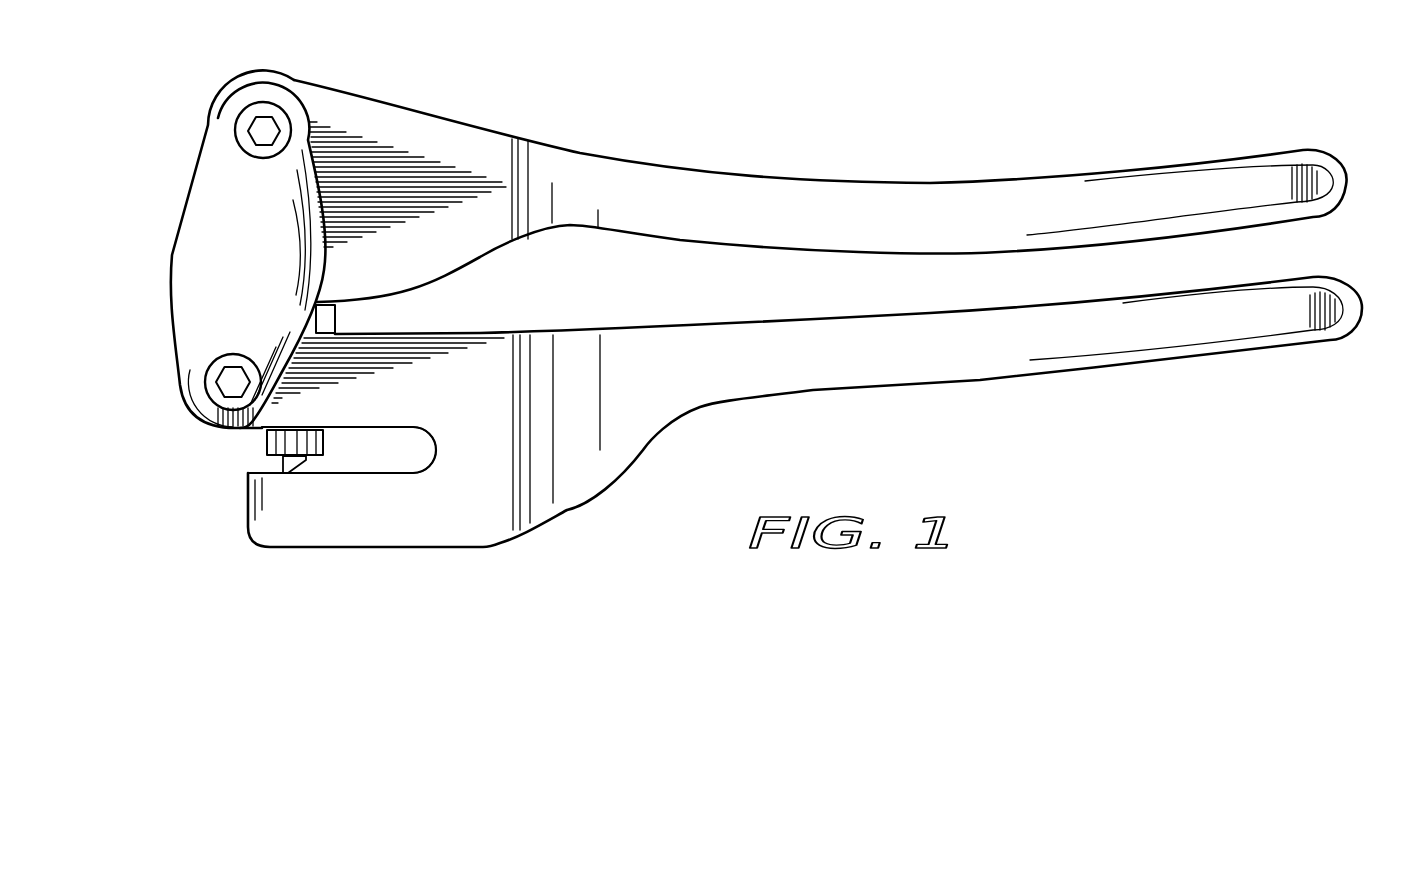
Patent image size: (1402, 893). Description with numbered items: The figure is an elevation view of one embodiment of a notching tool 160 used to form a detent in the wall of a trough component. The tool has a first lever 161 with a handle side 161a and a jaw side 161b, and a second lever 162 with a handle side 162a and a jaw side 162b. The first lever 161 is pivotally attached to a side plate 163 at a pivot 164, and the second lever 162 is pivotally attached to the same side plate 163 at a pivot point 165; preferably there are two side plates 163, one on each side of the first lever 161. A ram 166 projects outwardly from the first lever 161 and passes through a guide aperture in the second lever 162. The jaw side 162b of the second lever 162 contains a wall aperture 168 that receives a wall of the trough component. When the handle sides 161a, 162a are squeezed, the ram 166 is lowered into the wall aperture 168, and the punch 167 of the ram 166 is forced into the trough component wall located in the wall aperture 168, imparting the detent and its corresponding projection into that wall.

The notching tool 160 is at (778, 132).
The first lever 161 is at (626, 186).
The handle side 161a is at (1230, 190).
The jaw side 161b is at (418, 272).
The second lever 162 is at (880, 352).
The handle side 162a is at (1240, 315).
The jaw side 162b is at (500, 496).
The side plate 163 is at (250, 264).
The pivot 164 is at (266, 128).
The pivot point 165 is at (235, 381).
The ram 166 is at (320, 324).
The punch 167 is at (293, 455).
The wall aperture 168 is at (378, 450).